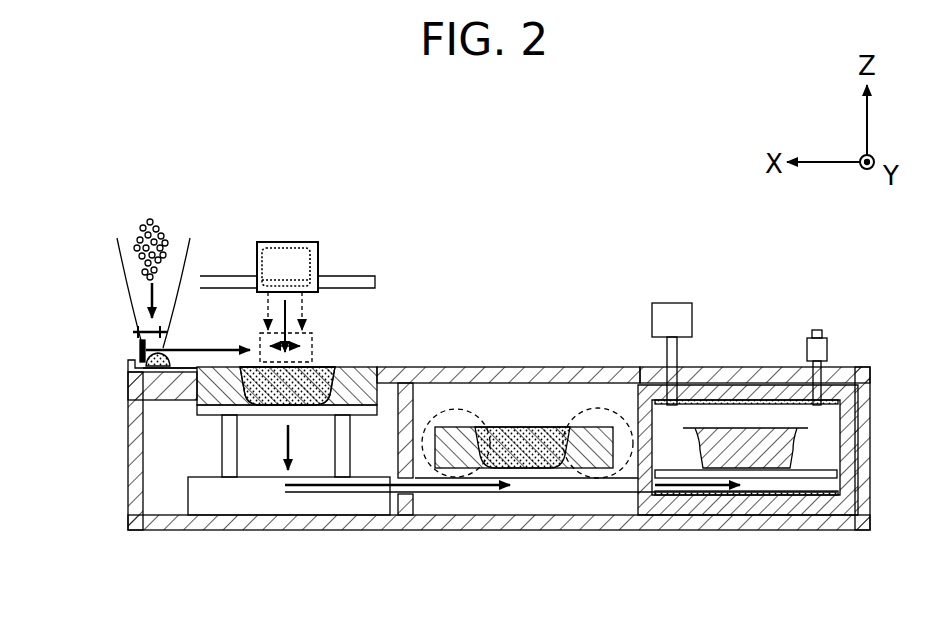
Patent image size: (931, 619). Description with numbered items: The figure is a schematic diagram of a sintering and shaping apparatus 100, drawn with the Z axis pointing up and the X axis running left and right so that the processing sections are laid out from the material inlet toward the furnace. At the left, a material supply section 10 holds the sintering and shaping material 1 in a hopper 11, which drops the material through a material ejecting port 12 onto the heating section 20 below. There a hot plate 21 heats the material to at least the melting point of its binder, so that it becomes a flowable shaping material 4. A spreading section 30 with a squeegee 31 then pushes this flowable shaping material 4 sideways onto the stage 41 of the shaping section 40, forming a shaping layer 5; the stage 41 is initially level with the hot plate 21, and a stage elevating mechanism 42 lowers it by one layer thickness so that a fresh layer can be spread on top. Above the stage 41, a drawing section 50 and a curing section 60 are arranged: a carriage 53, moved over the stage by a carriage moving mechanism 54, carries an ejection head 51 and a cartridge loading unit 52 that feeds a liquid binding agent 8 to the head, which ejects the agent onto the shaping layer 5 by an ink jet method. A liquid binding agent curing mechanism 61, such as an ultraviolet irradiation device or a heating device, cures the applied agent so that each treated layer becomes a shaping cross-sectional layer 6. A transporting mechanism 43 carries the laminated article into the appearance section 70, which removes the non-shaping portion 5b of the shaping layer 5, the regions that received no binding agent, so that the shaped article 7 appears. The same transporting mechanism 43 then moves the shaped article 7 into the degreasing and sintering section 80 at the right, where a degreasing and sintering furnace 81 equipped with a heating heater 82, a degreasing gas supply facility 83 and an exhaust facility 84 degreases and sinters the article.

The sintering and shaping apparatus 100 is at (466, 302).
The material supply section 10 is at (125, 248).
The sintering and shaping material 1 is at (146, 226).
The hopper 11 is at (128, 278).
The material ejecting port 12 is at (140, 330).
The spreading section 30 is at (135, 341).
The squeegee 31 is at (140, 350).
The heating section 20 is at (118, 378).
The hot plate 21 is at (158, 366).
The flowable shaping material 4 is at (173, 348).
The shaping section 40 is at (302, 394).
The shaping layer 5 is at (330, 366).
The stage 41 is at (252, 415).
The stage elevating mechanism 42 is at (208, 427).
The transporting mechanism 43 is at (512, 505).
The drawing section 50 is at (308, 246).
The curing section 60 is at (308, 246).
The ejection head 51 is at (282, 282).
The cartridge loading unit 52 is at (339, 227).
The liquid binding agent 8 is at (300, 260).
The carriage 53 is at (270, 247).
The carriage moving mechanism 54 is at (286, 268).
The liquid binding agent curing mechanism 61 is at (242, 278).
The non-shaping portion 5b is at (600, 408).
The appearance section 70 is at (527, 399).
The shaping cross-sectional layer 6 is at (533, 499).
The shaped article 7 is at (537, 462).
The degreasing and sintering section 80 is at (748, 403).
The degreasing and sintering furnace 81 is at (702, 388).
The heating heater 82 is at (752, 375).
The degreasing gas supply facility 83 is at (685, 305).
The exhaust facility 84 is at (812, 348).